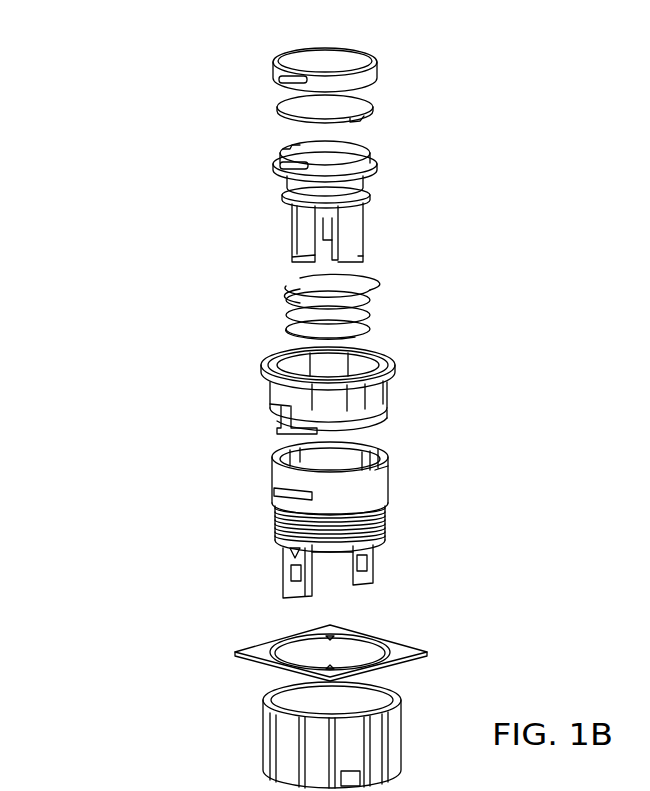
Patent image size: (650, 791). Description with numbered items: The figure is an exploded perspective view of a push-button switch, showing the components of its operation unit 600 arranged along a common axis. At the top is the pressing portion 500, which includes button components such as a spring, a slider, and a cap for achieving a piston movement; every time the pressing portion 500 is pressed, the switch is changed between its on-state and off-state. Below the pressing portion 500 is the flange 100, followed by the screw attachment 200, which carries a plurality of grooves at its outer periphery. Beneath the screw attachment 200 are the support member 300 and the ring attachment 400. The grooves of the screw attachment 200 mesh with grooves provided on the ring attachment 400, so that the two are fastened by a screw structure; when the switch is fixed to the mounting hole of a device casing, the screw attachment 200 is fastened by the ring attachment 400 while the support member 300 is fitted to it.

The operation unit 600 is at (214, 790).
The pressing portion 500 is at (399, 48).
The flange 100 is at (407, 385).
The screw attachment 200 is at (405, 476).
The support member 300 is at (403, 618).
The ring attachment 400 is at (410, 708).